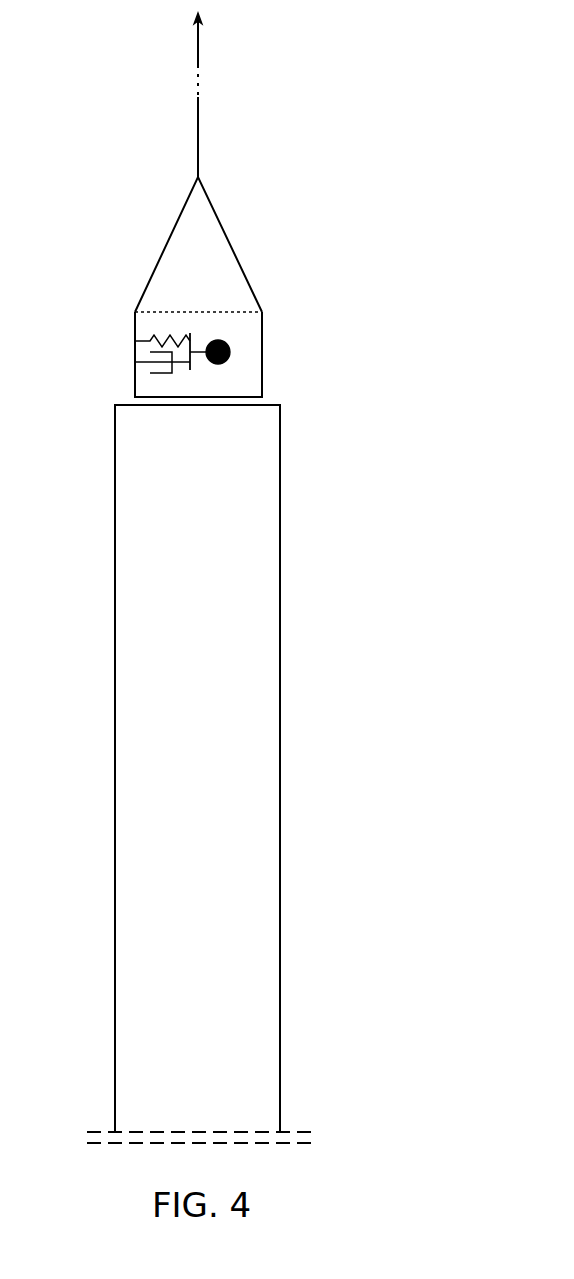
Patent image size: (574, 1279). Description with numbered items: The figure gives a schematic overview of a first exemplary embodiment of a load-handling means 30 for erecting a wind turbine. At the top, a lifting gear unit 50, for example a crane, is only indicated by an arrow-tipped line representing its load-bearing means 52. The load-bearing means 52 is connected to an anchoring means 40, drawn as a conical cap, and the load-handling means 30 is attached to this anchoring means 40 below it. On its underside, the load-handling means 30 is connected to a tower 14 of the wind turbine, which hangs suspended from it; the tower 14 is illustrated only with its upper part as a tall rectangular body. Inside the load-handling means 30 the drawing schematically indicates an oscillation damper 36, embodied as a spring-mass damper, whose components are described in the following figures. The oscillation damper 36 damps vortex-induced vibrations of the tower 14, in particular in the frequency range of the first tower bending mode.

The tower 14 is at (282, 512).
The load-handling means 30 is at (310, 278).
The oscillation damper 36 is at (238, 349).
The anchoring means 40 is at (230, 240).
The lifting gear unit 50 is at (200, 30).
The load-bearing means 52 is at (200, 130).